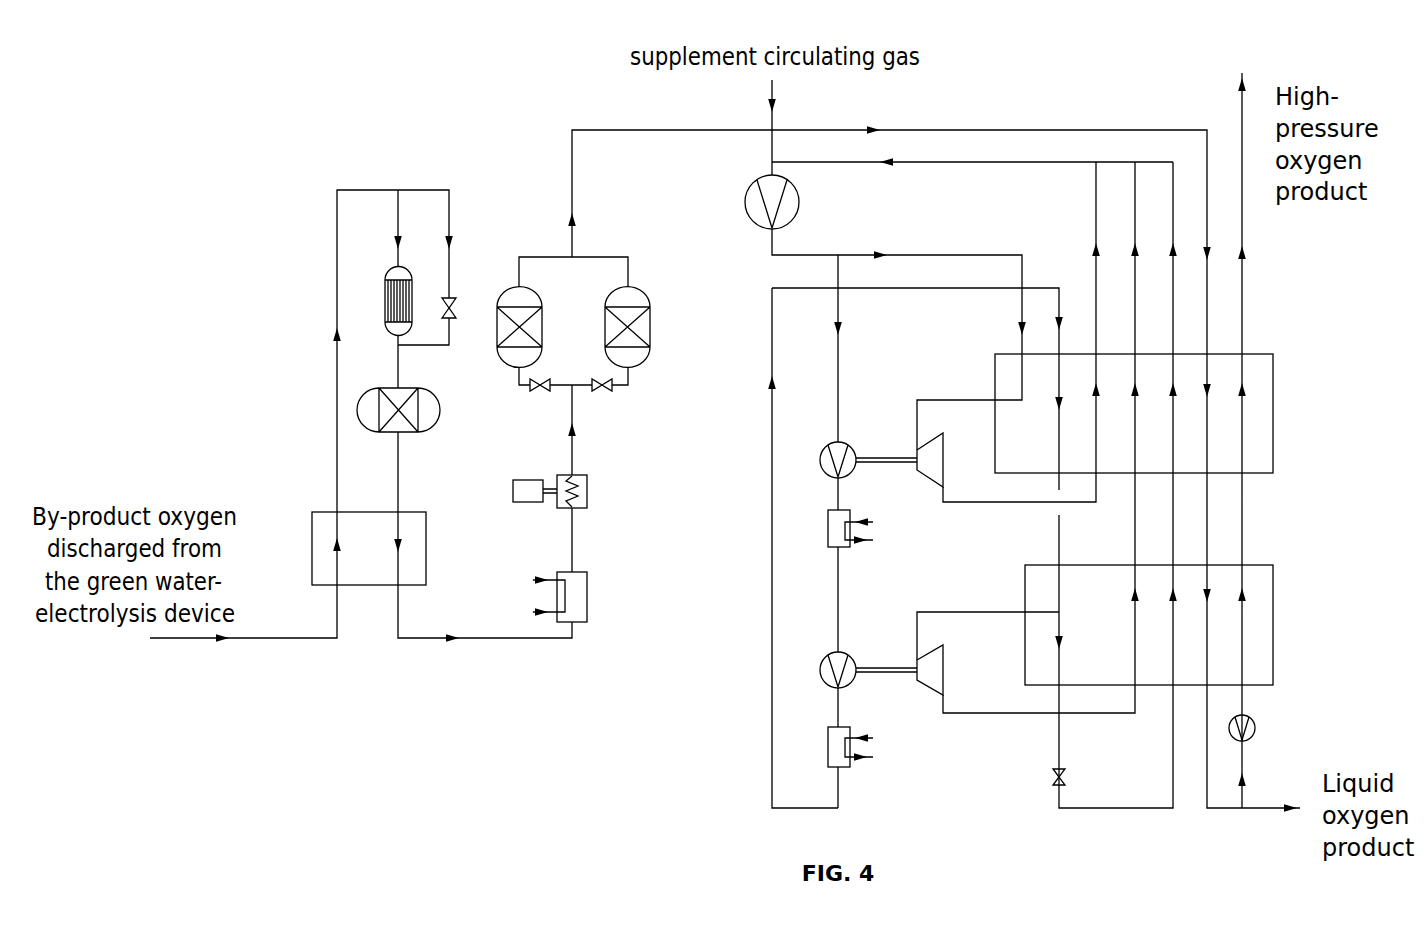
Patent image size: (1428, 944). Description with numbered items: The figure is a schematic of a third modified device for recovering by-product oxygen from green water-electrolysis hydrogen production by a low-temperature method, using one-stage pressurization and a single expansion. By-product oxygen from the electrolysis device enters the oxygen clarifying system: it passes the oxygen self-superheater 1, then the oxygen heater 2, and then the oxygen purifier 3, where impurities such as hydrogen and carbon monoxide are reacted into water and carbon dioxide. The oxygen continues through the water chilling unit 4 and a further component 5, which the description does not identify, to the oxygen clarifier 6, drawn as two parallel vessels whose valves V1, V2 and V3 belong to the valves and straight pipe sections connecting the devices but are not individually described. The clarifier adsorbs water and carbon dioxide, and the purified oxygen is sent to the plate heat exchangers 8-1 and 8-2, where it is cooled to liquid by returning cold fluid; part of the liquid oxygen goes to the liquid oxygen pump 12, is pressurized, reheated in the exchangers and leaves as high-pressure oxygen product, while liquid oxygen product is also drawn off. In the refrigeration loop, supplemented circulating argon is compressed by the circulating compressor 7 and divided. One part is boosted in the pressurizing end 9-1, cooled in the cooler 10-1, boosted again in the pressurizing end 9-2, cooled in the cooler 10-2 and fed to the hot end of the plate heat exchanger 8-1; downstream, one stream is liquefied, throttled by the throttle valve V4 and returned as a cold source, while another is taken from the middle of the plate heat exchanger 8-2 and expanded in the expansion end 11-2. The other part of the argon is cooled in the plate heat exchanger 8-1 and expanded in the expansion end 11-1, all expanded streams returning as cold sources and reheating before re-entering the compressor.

The oxygen self-superheater 1 is at (312, 543).
The oxygen heater 2 is at (385, 298).
The oxygen purifier 3 is at (432, 428).
The water chilling unit 4 is at (618, 617).
The heater 5 is at (618, 512).
The oxygen clarifier 6 is at (613, 288).
The argon circulating compressor 7 is at (745, 200).
The plate heat exchanger 8-1 is at (995, 365).
The plate heat exchanger 8-2 is at (1025, 595).
The pressurizing end of the high-temperature expander 9-1 is at (826, 444).
The pressurizing end of the low-temperature expander 9-2 is at (825, 655).
The cooler 10-1 is at (828, 520).
The cooler 10-2 is at (828, 733).
The expansion end of the high-temperature expander 11-1 is at (930, 478).
The expansion end of the low-temperature expander 11-2 is at (930, 690).
The liquid oxygen pump 12 is at (1287, 745).
The valve V1 is at (452, 298).
The valve V2 is at (606, 390).
The valve V3 is at (542, 389).
The throttle valve V4 is at (1055, 774).